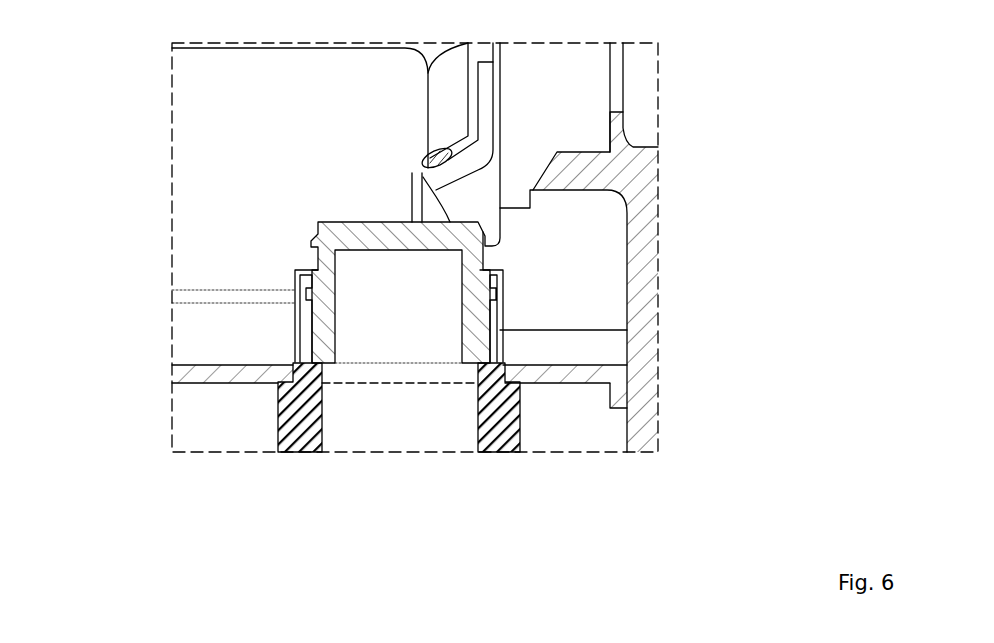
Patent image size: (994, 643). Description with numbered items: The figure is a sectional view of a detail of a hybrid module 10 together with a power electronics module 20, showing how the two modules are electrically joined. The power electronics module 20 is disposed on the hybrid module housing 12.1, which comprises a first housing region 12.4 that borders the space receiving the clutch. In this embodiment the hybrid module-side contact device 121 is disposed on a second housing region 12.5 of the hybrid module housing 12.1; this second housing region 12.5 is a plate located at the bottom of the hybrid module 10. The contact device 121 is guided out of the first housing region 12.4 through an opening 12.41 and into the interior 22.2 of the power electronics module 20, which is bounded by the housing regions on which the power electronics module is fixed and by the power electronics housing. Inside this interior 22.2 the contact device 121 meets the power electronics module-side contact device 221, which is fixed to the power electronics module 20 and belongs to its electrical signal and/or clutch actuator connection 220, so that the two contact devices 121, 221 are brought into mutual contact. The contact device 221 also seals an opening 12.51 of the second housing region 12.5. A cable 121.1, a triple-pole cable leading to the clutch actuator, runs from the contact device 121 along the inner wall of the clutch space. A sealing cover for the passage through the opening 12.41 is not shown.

The hybrid module 10 is at (696, 293).
The hybrid module housing 12.1 is at (213, 73).
The first housing region 12.4 is at (645, 183).
The opening 12.41 is at (517, 103).
The second housing region 12.5 is at (193, 374).
The opening of the second housing region 12.51 is at (390, 372).
The hybrid module-side contact device 121 is at (323, 250).
The cable 121.1 is at (435, 173).
The power electronics module 20 is at (562, 463).
The interior of the power electronics module 22.2 is at (193, 433).
The electrical signal and/or clutch actuator connection 220 is at (322, 407).
The power electronics module-side contact device 221 is at (520, 427).